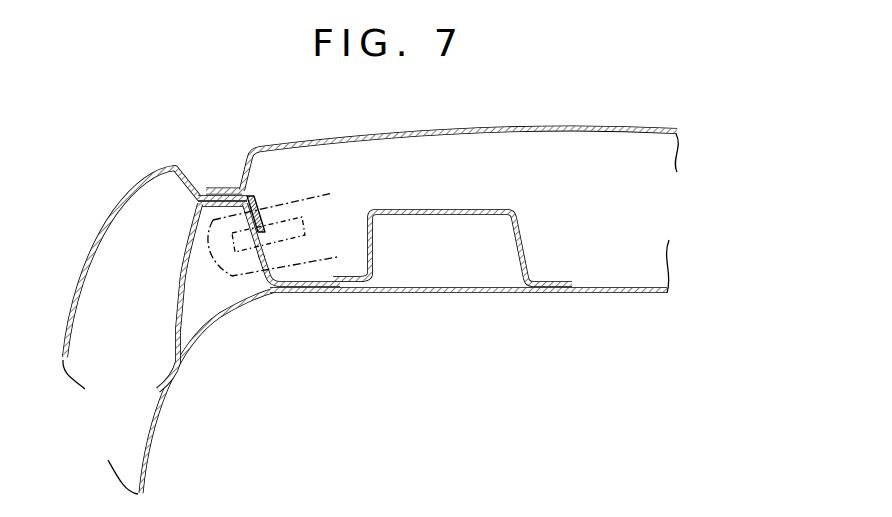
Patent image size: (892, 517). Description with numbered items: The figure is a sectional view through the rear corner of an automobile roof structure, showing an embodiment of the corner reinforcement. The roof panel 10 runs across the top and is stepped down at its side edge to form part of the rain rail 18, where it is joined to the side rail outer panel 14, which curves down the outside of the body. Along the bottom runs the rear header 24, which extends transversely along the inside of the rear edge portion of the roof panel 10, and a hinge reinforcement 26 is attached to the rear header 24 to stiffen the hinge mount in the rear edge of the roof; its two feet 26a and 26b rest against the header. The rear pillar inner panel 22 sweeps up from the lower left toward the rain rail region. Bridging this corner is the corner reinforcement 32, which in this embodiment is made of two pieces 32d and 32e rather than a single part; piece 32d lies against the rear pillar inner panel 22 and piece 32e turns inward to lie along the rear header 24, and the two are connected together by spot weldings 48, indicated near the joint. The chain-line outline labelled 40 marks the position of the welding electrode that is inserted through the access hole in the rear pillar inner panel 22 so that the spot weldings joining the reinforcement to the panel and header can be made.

The roof panel 10 is at (536, 125).
The side rail outer panel 14 is at (126, 189).
The rain rail 18 is at (214, 184).
The rear pillar inner panel 22 is at (157, 428).
The rear header 24 is at (607, 297).
The hinge reinforcement 26 is at (485, 210).
The left flange of bracket 26a is at (362, 273).
The right flange of bracket 26b is at (543, 281).
The corner reinforcement 32 is at (176, 272).
The piece of corner reinforcement 32d is at (174, 340).
The piece of corner reinforcement 32e is at (262, 264).
The welding electrode 40 is at (307, 191).
The spot weldings 48 is at (256, 219).